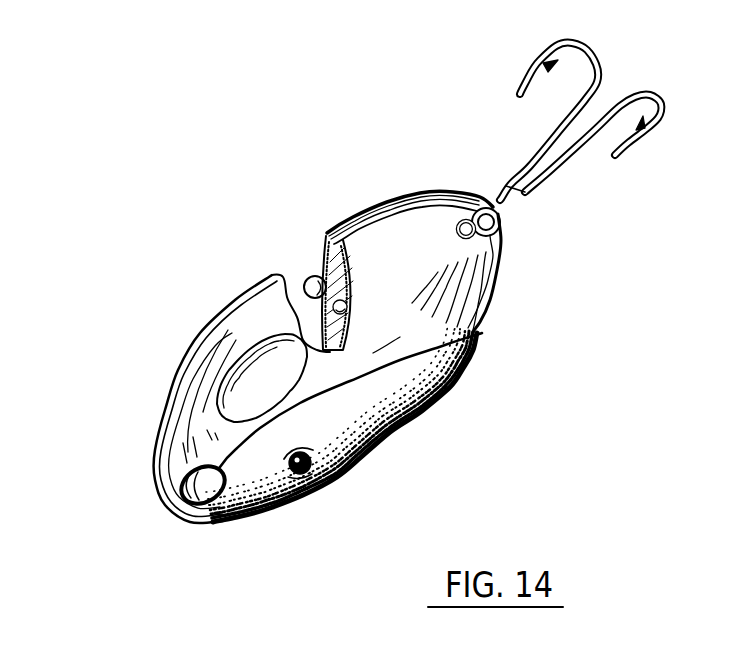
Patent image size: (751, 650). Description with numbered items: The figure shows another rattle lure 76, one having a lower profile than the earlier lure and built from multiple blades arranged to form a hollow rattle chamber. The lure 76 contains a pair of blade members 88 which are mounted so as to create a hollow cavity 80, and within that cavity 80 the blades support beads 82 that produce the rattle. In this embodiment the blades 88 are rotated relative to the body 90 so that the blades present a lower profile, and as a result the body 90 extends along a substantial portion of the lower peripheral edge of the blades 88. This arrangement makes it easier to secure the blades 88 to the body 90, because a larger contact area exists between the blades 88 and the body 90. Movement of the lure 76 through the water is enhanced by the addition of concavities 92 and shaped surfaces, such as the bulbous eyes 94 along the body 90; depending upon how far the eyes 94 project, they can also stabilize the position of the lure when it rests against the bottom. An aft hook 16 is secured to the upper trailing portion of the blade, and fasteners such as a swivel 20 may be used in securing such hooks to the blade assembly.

The aft hook 16 is at (667, 103).
The swivel 20 is at (180, 491).
The lure 76 is at (157, 362).
The hollow cavity 80 is at (323, 272).
The beads 82 is at (308, 279).
The blade members 88 is at (211, 333).
The body 90 is at (378, 450).
The concavities 92 is at (262, 405).
The bulbous eyes 94 is at (288, 510).